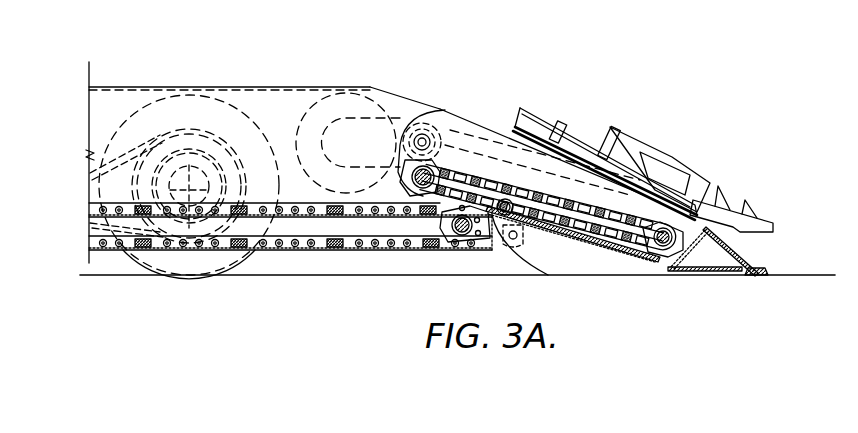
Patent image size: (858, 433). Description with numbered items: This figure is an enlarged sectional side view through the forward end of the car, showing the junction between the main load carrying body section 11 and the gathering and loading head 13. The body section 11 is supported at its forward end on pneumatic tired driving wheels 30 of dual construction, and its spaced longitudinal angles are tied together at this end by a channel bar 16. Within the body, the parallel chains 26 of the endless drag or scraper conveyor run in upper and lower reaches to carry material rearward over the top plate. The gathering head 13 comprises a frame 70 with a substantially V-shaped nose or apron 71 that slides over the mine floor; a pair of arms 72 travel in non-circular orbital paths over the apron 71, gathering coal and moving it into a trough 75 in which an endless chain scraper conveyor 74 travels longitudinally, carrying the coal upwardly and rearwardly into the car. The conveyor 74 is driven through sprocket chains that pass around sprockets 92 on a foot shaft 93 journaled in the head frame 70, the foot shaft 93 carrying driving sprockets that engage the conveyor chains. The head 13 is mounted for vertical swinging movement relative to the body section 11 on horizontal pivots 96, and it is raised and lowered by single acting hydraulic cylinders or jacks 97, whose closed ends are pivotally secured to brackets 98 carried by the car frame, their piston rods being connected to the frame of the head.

The main body section 11 is at (172, 86).
The gathering and loading head 13 is at (578, 86).
The channel bar 16 is at (513, 246).
The parallel chains 26 is at (308, 207).
The pneumatic tired driving wheels 30 is at (237, 268).
The frame 70 is at (608, 246).
The V-shaped nose or apron 71 is at (742, 258).
The arms 72 is at (728, 205).
The endless chain scraper conveyor 74 is at (582, 240).
The trough 75 is at (555, 222).
The sprockets 92 is at (638, 250).
The foot shaft 93 is at (672, 272).
The horizontal pivots 96 is at (426, 137).
The hydraulic cylinders or jacks 97 is at (514, 218).
The brackets 98 is at (528, 245).